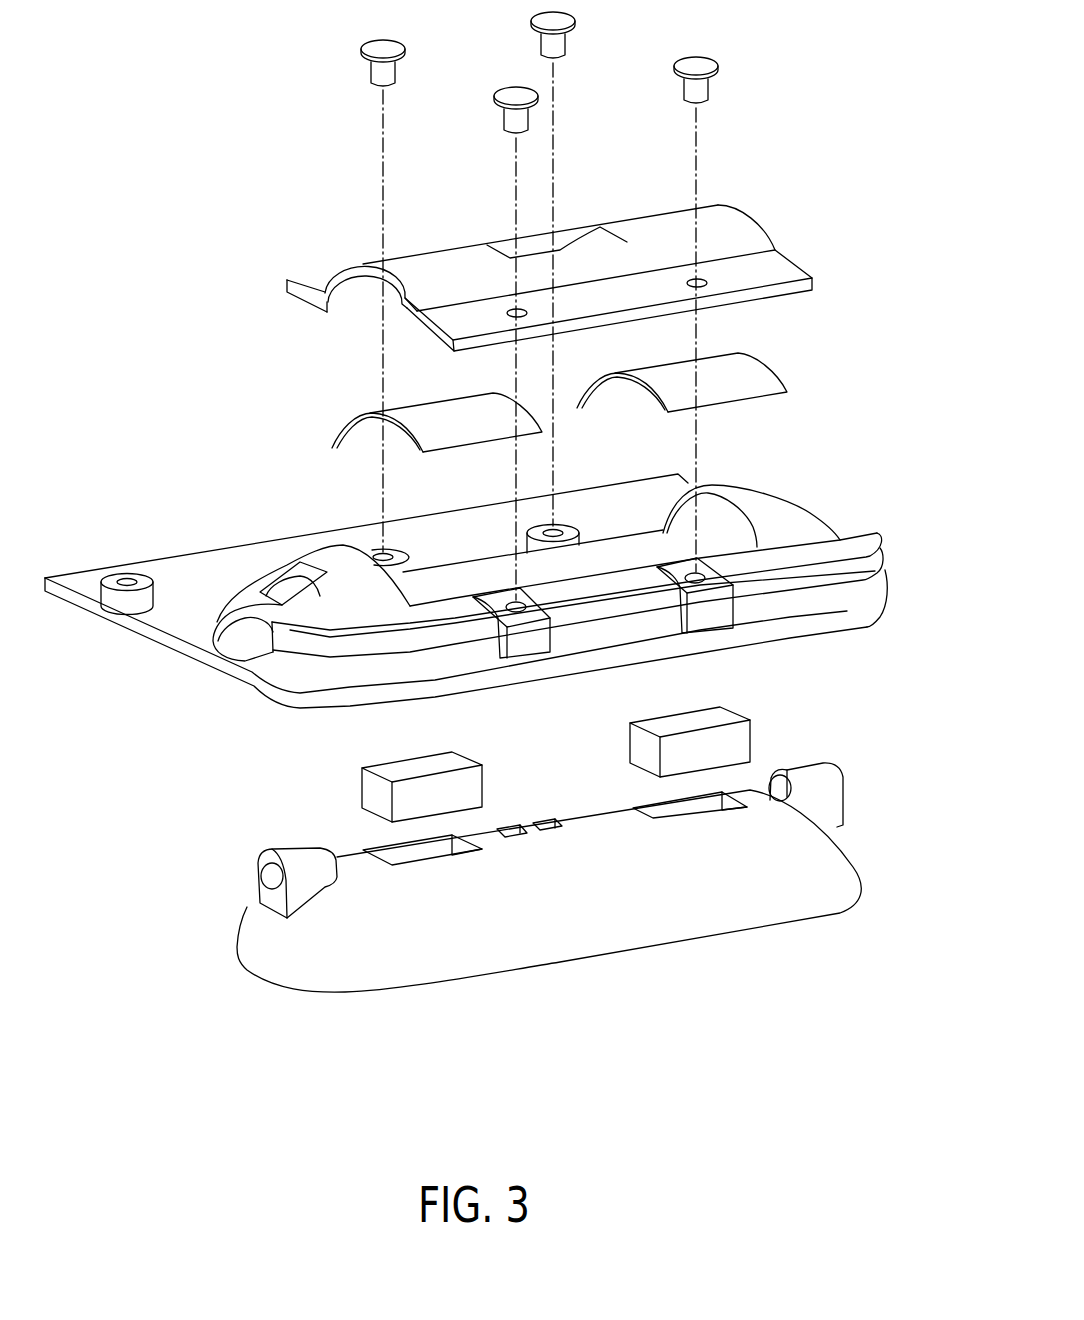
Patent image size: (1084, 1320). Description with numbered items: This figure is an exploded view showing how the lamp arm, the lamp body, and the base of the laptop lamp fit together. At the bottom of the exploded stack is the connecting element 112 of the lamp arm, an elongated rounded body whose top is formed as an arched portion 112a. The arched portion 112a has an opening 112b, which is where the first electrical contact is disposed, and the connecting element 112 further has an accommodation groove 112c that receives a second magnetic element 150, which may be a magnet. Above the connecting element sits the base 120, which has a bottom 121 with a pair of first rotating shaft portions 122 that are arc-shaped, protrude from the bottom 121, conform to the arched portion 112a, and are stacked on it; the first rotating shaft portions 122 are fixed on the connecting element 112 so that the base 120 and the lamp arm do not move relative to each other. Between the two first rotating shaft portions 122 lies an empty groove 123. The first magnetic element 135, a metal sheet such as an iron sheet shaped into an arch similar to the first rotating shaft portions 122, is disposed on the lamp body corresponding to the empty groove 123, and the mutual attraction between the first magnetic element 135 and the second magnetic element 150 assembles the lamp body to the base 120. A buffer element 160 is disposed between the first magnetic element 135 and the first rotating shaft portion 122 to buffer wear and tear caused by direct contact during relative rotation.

The base 120 is at (104, 22).
The bottom 121 is at (188, 618).
The first rotating shaft portion 122 is at (793, 518).
The empty groove 123 is at (622, 560).
The first magnetic element 135 is at (737, 238).
The buffer element 160 is at (750, 375).
The second magnetic element 150 is at (730, 747).
The connecting element 112 is at (599, 914).
The arched portion 112a is at (848, 849).
The opening 112b is at (565, 836).
The accommodation groove 112c is at (437, 858).